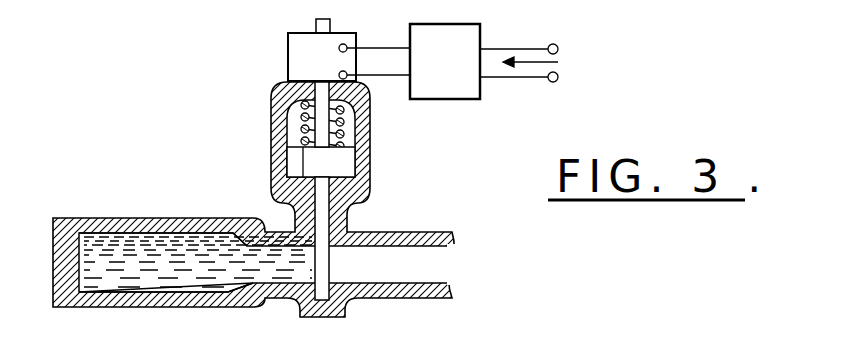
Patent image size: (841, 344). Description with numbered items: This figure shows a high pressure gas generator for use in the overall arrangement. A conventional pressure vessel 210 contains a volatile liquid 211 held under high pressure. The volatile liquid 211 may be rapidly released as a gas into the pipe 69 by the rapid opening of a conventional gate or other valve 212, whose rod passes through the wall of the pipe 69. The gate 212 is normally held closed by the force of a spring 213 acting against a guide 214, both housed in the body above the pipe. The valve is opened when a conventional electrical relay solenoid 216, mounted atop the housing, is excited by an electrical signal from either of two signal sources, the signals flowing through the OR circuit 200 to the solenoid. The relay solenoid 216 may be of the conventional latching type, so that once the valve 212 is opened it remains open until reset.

The pipe 69 is at (409, 232).
The OR circuit 200 is at (480, 26).
The pressure vessel 210 is at (126, 217).
The volatile liquid 211 is at (170, 250).
The gate valve 212 is at (329, 258).
The spring 213 is at (345, 128).
The guide 214 is at (343, 163).
The electrical relay solenoid 216 is at (288, 62).